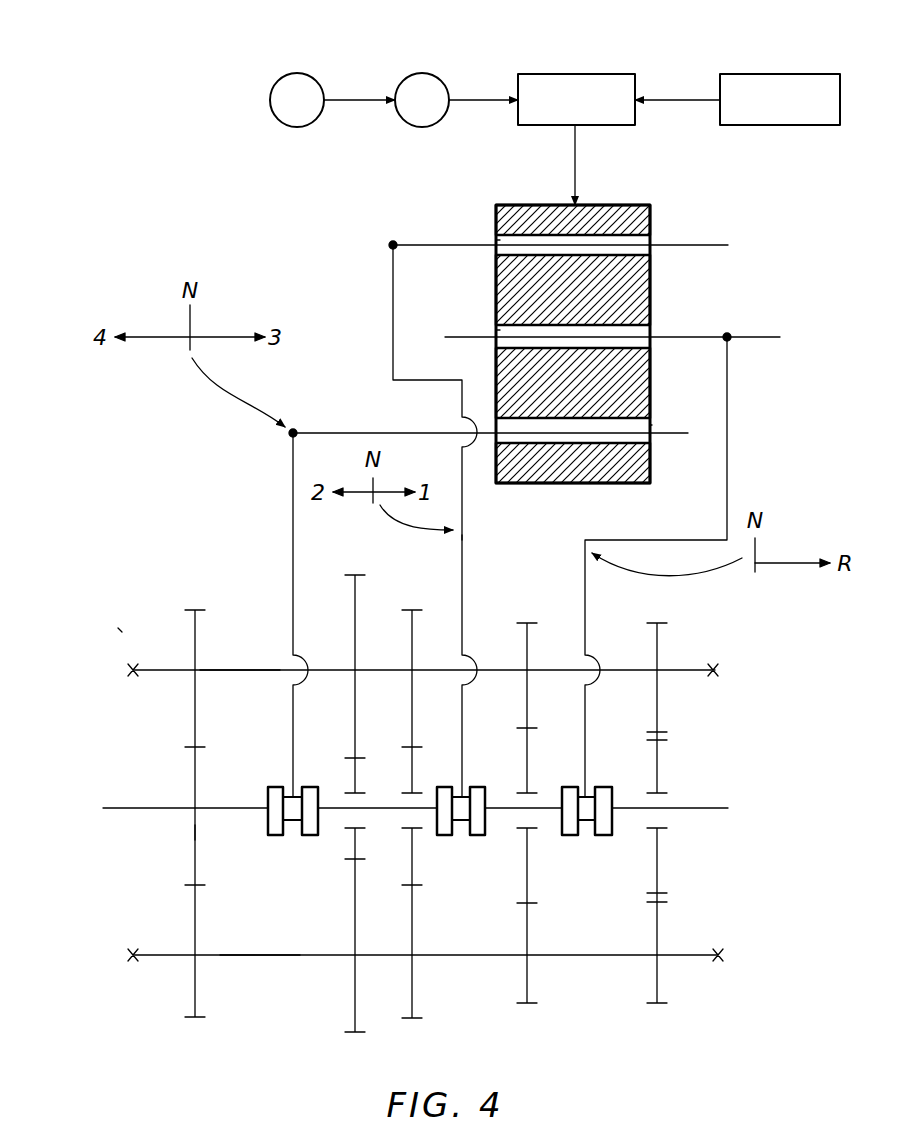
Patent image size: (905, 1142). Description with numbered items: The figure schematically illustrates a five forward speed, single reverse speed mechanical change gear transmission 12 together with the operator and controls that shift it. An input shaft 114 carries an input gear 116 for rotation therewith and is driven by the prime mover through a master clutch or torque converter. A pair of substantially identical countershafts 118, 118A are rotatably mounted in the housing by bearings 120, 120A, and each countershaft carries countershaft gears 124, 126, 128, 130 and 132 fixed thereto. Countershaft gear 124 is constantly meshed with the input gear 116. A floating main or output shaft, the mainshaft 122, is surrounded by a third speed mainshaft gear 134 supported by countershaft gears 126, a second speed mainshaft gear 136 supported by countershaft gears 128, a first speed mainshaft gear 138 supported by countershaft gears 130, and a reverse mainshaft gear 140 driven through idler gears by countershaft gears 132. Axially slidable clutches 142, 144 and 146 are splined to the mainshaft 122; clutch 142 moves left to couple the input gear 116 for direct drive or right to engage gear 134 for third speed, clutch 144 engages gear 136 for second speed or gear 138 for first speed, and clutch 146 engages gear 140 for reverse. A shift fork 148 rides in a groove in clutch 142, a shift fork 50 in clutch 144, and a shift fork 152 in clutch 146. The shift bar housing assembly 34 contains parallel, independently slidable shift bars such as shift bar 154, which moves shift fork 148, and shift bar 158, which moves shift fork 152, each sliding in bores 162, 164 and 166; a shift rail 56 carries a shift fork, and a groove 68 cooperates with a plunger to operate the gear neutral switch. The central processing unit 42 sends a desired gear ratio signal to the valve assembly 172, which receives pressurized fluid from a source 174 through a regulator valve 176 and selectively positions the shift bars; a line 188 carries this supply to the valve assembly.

The transmission 12 is at (118, 628).
The shift bar housing assembly 34 is at (650, 308).
The central processing unit 42 is at (765, 74).
The shift fork 50 is at (462, 537).
The shift rail 56 is at (415, 245).
The groove 68 is at (650, 215).
The input shaft 114 is at (120, 808).
The input gear 116 is at (195, 832).
The countershaft 118 is at (238, 670).
The countershaft 118A is at (262, 955).
The bearing 120 is at (133, 670).
The bearing 120A is at (133, 955).
The mainshaft 122 is at (690, 808).
The countershaft gear 124 is at (195, 617).
The countershaft gear 126 is at (355, 635).
The countershaft gear 128 is at (412, 635).
The countershaft gear 130 is at (527, 625).
The countershaft gear 132 is at (657, 625).
The third speed mainshaft gear 134 is at (355, 770).
The second speed mainshaft gear 136 is at (412, 762).
The first speed mainshaft gear 138 is at (527, 845).
The reverse mainshaft gear 140 is at (657, 845).
The clutch 142 is at (270, 790).
The clutch 144 is at (470, 790).
The clutch 146 is at (570, 835).
The shift fork 148 is at (293, 497).
The shift fork 152 is at (727, 430).
The shift bar 154 is at (343, 432).
The shift bar 158 is at (750, 337).
The bore 162 is at (652, 425).
The bore 164 is at (496, 330).
The bore 166 is at (496, 240).
The valve assembly 172 is at (578, 74).
The source of pressurized fluid 174 is at (297, 73).
The regulator valve 176 is at (425, 73).
The signal line 188 is at (482, 98).